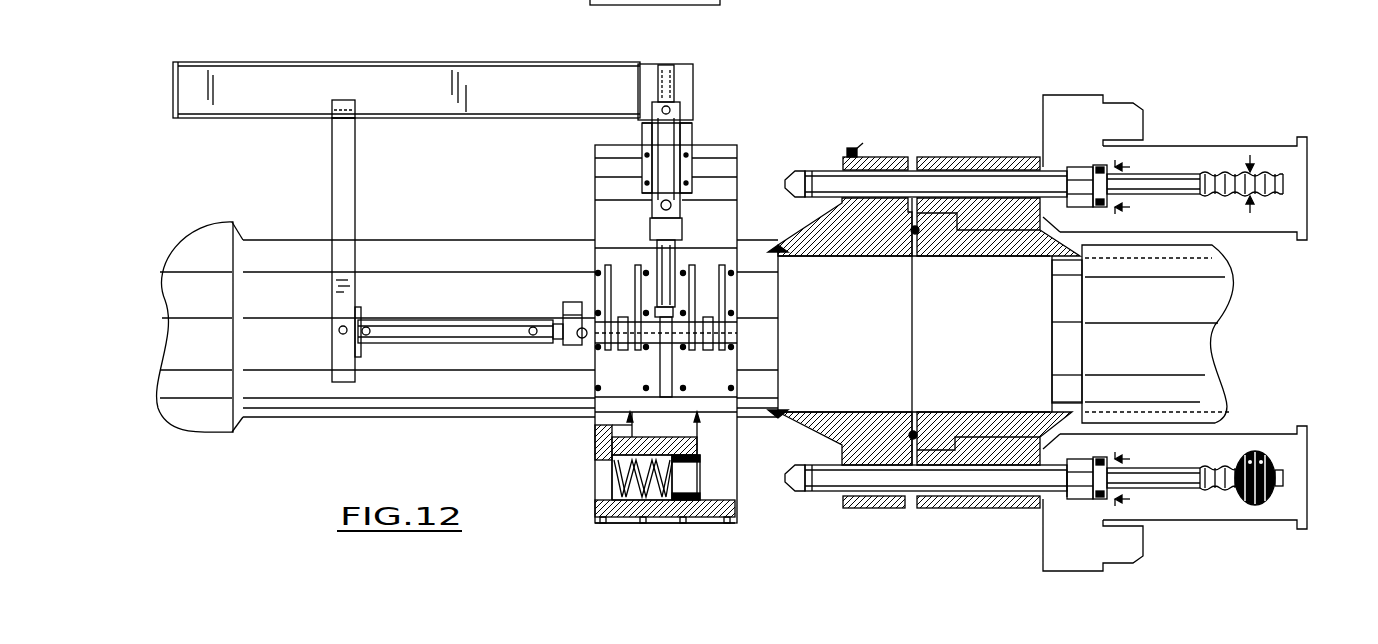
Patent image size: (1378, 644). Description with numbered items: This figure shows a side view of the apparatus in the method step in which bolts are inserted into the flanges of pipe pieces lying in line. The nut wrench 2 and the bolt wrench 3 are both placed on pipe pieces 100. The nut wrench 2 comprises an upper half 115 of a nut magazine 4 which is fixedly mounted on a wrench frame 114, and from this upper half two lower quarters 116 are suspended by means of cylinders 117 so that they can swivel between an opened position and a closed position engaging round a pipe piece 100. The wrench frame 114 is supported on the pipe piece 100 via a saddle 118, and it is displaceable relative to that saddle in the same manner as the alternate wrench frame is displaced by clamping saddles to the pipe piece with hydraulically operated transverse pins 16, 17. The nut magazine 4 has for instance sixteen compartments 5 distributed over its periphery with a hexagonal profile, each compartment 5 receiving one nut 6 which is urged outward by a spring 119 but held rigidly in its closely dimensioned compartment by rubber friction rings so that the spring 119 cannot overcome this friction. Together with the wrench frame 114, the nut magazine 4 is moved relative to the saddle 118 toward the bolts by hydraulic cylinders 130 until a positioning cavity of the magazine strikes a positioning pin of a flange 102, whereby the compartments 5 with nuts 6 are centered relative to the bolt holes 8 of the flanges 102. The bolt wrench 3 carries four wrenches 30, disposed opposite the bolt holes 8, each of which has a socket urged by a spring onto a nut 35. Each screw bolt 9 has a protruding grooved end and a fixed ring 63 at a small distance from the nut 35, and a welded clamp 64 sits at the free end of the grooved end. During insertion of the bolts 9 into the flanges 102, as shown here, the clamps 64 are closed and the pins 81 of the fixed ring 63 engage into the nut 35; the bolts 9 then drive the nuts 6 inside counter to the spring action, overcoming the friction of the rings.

The nut wrench 2 is at (722, 88).
The bolt wrench 3 is at (1196, 63).
The nut magazine 4 is at (590, 208).
The compartment 5 is at (656, 488).
The nut 6 is at (690, 480).
The bolt hole 8 is at (1003, 160).
The bolt 9 is at (960, 474).
The transverse pin 16 is at (339, 334).
The transverse pin 17 is at (576, 341).
The wrench 30 is at (1195, 158).
The nut 35 is at (1085, 166).
The fixed ring 63 is at (1103, 166).
The clamp 64 is at (1278, 503).
The pin 81 is at (1077, 489).
The pipe piece 100 is at (408, 420).
The flange 102 is at (890, 157).
The wrench frame 114 is at (380, 76).
The upper half 115 is at (722, 160).
The lower quarter 116 is at (597, 440).
The cylinder 117 is at (680, 209).
The saddle 118 is at (356, 191).
The spring 119 is at (597, 481).
The hydraulic cylinder 130 is at (430, 320).